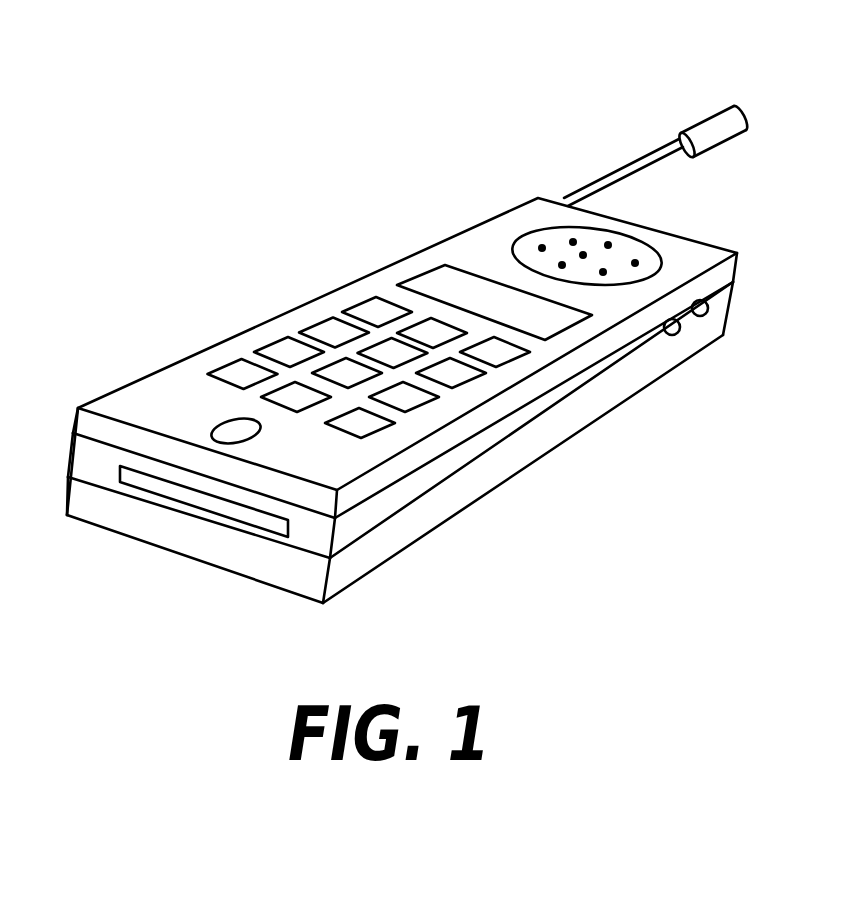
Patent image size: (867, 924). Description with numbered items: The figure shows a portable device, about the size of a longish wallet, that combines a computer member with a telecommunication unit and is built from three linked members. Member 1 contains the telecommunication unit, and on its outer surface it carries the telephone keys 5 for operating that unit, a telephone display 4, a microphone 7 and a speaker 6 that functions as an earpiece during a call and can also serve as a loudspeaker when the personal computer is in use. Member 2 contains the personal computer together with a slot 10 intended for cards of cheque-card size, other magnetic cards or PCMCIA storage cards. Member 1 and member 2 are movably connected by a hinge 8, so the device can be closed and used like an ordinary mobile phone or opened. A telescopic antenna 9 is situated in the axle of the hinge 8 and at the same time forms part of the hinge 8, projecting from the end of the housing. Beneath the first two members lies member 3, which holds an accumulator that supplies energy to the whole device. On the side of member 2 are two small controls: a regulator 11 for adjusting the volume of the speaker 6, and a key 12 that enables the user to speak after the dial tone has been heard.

The member 1 is at (138, 398).
The member 2 is at (383, 507).
The member 3 is at (577, 415).
The telephone display 4 is at (433, 282).
The keys 5 is at (283, 350).
The speaker 6 is at (623, 253).
The microphone 7 is at (245, 430).
The hinge 8 is at (76, 422).
The telescopic antenna 9 is at (707, 128).
The connector slot 10 is at (203, 502).
The regulator 11 is at (703, 306).
The key 12 is at (673, 327).